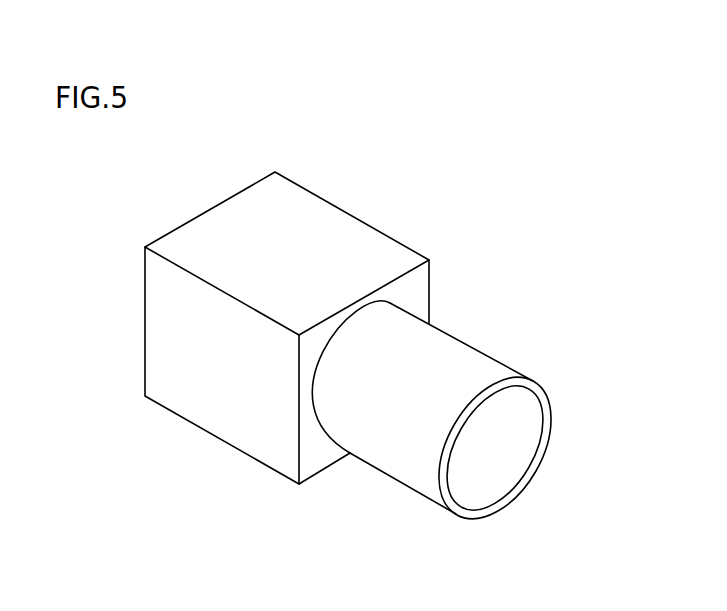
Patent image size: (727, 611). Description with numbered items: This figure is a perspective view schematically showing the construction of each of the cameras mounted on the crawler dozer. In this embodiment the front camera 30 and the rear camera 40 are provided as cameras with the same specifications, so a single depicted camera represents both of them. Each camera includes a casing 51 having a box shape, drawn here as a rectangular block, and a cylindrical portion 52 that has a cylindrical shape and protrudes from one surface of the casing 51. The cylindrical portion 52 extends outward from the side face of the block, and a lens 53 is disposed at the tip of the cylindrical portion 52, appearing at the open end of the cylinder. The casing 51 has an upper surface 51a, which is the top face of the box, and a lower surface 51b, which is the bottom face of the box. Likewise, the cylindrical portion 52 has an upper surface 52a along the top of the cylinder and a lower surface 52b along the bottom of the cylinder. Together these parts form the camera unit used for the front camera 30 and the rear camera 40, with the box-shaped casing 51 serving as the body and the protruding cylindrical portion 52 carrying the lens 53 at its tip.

The front camera 30 is at (406, 194).
The rear camera 40 is at (350, 341).
The casing 51 is at (172, 342).
The upper surface 51a is at (318, 235).
The lower surface 51b is at (230, 445).
The cylindrical portion 52 is at (400, 442).
The upper surface 52a is at (455, 363).
The lower surface 52b is at (434, 501).
The lens 53 is at (510, 458).